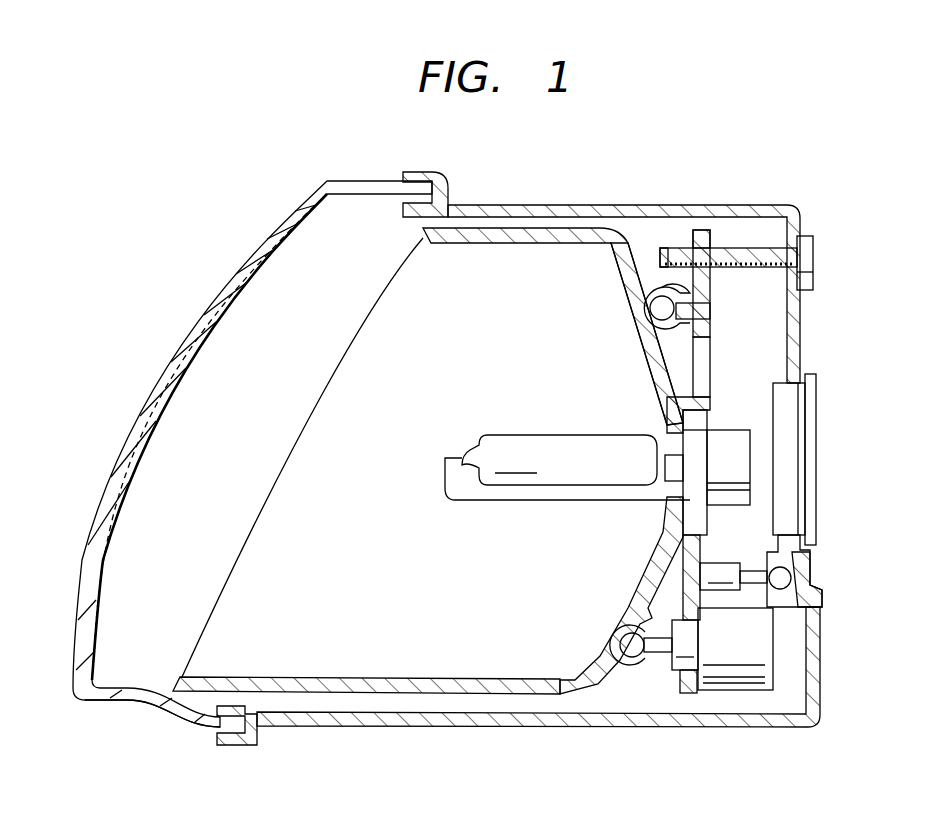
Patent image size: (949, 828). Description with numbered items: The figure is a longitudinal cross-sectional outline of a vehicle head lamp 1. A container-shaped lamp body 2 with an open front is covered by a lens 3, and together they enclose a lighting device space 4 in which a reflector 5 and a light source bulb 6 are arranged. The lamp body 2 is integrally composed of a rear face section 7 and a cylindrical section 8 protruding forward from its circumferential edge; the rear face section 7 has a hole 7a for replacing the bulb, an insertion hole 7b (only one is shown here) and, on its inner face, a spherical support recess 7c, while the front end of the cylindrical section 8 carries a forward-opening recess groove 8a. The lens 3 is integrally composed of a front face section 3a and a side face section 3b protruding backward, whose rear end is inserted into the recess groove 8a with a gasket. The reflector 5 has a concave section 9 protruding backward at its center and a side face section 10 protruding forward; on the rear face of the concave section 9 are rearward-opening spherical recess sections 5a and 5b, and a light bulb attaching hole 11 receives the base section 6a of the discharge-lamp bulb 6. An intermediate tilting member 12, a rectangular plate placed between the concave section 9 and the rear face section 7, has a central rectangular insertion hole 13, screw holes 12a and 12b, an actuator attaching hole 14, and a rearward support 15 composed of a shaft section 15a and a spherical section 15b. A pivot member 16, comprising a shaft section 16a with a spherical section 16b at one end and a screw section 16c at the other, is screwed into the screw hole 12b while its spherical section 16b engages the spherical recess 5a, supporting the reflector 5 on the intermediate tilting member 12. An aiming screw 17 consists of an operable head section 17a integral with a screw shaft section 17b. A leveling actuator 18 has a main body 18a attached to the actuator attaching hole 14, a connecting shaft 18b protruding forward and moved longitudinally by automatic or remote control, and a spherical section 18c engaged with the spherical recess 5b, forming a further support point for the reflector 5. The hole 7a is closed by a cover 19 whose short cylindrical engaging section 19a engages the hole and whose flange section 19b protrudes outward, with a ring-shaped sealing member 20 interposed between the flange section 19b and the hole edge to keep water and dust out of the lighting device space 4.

The head lamp 1 is at (800, 166).
The lamp body 2 is at (800, 325).
The lens 3 is at (246, 477).
The front face section 3a is at (150, 414).
The side face section 3b is at (120, 706).
The lighting device space 4 is at (228, 433).
The reflector 5 is at (441, 481).
The spherical recess section 5a is at (643, 246).
The spherical recess section 5b is at (641, 658).
The light source bulb 6 is at (540, 472).
The base section 6a is at (670, 440).
The rear face section 7 is at (829, 557).
The hole 7a is at (812, 548).
The insertion hole 7b is at (815, 248).
The spherical support recess 7c is at (812, 572).
The cylindrical section 8 is at (540, 728).
The recess groove 8a is at (240, 746).
The concave section 9 is at (652, 570).
The side face section 10 is at (430, 680).
The light bulb attaching hole 11 is at (700, 436).
The intermediate tilting member 12 is at (712, 240).
The screw hole 12a is at (720, 252).
The screw hole 12b is at (712, 310).
The rectangular insertion hole 13 is at (705, 545).
The actuator attaching hole 14 is at (700, 662).
The support 15 is at (735, 592).
The shaft section 15a is at (750, 600).
The spherical section 15b is at (768, 590).
The pivot member 16 is at (613, 314).
The shaft section 16a is at (668, 330).
The spherical section 16b is at (650, 298).
The screw section 16c is at (710, 340).
The aiming screw 17 is at (706, 248).
The head section 17a is at (815, 275).
The screw shaft section 17b is at (668, 250).
The leveling actuator 18 is at (752, 694).
The main body 18a is at (777, 672).
The connecting shaft 18b is at (688, 690).
The spherical section 18c is at (632, 658).
The cover 19 is at (805, 392).
The cylindrical engaging section 19a is at (790, 420).
The flange section 19b is at (805, 490).
The ring-shaped sealing member 20 is at (812, 378).